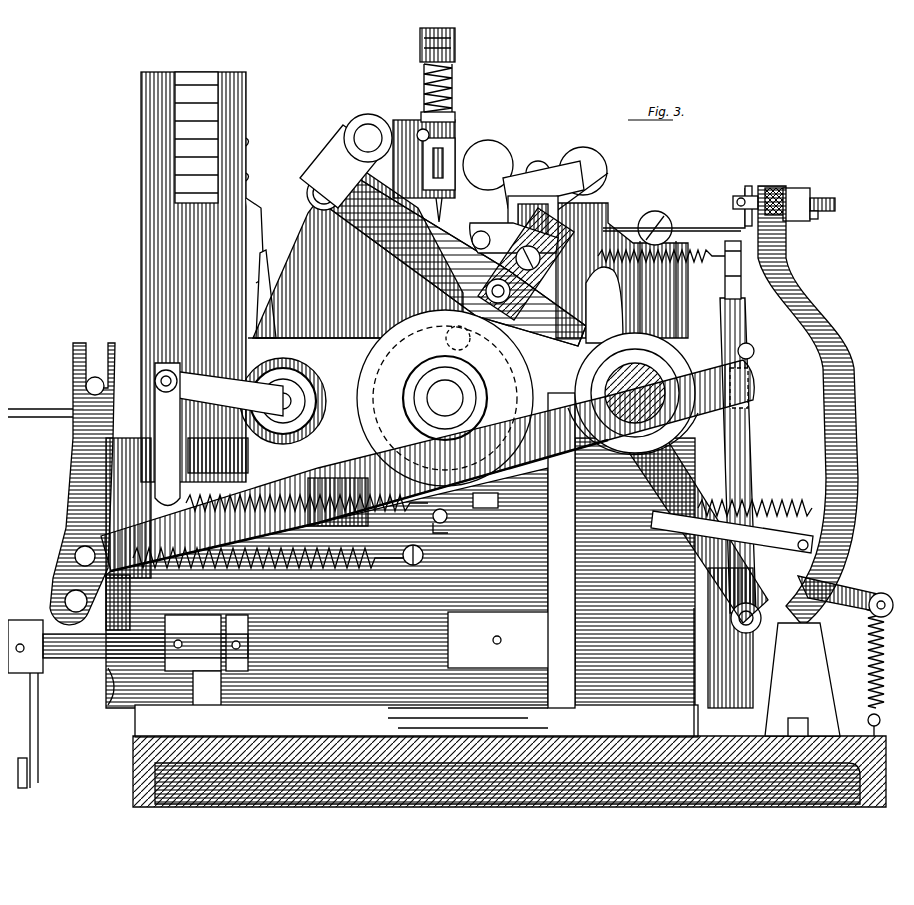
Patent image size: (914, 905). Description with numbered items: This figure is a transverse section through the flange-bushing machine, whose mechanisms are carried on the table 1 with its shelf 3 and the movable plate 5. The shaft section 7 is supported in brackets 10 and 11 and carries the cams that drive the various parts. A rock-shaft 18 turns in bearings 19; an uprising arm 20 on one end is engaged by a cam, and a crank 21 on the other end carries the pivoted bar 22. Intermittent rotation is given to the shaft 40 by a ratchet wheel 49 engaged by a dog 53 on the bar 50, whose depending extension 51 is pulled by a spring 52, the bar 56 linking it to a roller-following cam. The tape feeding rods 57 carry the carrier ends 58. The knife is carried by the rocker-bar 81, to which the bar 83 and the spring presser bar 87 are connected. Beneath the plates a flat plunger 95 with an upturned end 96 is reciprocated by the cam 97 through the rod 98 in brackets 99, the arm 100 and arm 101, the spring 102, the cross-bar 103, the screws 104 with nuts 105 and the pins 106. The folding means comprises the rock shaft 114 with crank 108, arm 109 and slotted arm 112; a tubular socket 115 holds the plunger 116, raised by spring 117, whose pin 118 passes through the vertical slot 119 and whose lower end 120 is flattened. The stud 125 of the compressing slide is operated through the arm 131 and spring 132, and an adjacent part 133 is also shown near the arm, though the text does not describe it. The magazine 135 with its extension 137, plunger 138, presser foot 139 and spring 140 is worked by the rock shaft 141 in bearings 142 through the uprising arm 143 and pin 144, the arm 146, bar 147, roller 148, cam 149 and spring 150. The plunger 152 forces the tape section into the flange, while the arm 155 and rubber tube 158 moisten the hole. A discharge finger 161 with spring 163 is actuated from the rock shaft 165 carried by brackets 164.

The table 1 is at (125, 772).
The shelf 3 is at (688, 715).
The movable plate 5 is at (665, 650).
The shaft section 7 is at (720, 395).
The bracket 10 is at (615, 200).
The bracket 11 is at (310, 264).
The rock-shaft 18 is at (66, 650).
The bearings 19 is at (402, 587).
The uprising arm 20 is at (561, 550).
The crank 21 is at (30, 725).
The bar 22 is at (14, 780).
The shaft 40 is at (445, 398).
The ratchet wheel 49 is at (445, 398).
The bar 50 is at (526, 264).
The depending extension 51 is at (484, 508).
The spring 52 is at (432, 516).
The dog 53 is at (478, 284).
The bar 56 is at (582, 300).
The rods 57 is at (473, 223).
The carrier ends 58 is at (560, 175).
The rocker-bar 81 is at (602, 162).
The bar 83 is at (668, 285).
The spring presser bar 87 is at (490, 133).
The flat plunger 95 is at (700, 220).
The upturned end 96 is at (741, 178).
The cam 97 is at (717, 300).
The rod 98 is at (738, 625).
The brackets 99 is at (700, 645).
The arm 100 is at (850, 418).
The arm 101 is at (725, 518).
The spring 102 is at (765, 515).
The cross-bar 103 is at (790, 180).
The screws 104 is at (827, 196).
The nuts 105 is at (805, 211).
The pins 106 is at (725, 192).
The crank 108 is at (318, 143).
The arm 109 is at (308, 210).
The arm 112 is at (395, 112).
The rock shaft 114 is at (360, 130).
The tubular socket 115 is at (447, 108).
The plunger 116 is at (446, 80).
The spring 117 is at (445, 58).
The pin 118 is at (421, 127).
The vertical slot 119 is at (433, 148).
The lower end of plunger 120 is at (434, 204).
The stud 125 is at (740, 378).
The arm 131 is at (415, 230).
The spring 132 is at (700, 242).
The pin 133 is at (746, 345).
The magazine 135 is at (238, 135).
The extension 137 is at (22, 412).
The plunger 138 is at (90, 350).
The presser foot 139 is at (262, 300).
The spring 140 is at (255, 225).
The rock shaft 141 is at (57, 592).
The bearings 142 is at (102, 690).
The uprising arm 143 is at (60, 495).
The pin 144 is at (78, 378).
The arm 146 is at (45, 556).
The bar 147 is at (105, 520).
The roller 148 is at (580, 402).
The cam 149 is at (668, 445).
The spring 150 is at (310, 560).
The plunger 152 is at (283, 393).
The arm 155 is at (224, 393).
The rubber tube 158 is at (160, 362).
The discharge finger 161 is at (866, 582).
The spring 163 is at (876, 652).
The brackets 164 is at (802, 679).
The rock shaft 165 is at (820, 572).